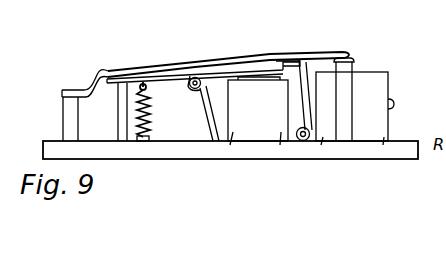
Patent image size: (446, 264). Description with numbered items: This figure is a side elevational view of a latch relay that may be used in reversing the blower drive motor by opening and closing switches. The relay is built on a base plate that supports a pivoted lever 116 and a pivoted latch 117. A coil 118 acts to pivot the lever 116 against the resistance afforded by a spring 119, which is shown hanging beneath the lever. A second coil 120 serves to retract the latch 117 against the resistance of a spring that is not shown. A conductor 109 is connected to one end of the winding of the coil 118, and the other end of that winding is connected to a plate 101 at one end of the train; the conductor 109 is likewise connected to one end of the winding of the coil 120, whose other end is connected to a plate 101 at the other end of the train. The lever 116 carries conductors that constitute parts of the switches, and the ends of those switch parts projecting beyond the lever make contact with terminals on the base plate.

The plate 101 is at (231, 145).
The conductor 109 is at (280, 145).
The pivoted lever 116 is at (230, 63).
The pivoted latch 117 is at (307, 59).
The coil 118 is at (263, 108).
The spring 119 is at (150, 113).
The coil 120 is at (384, 108).